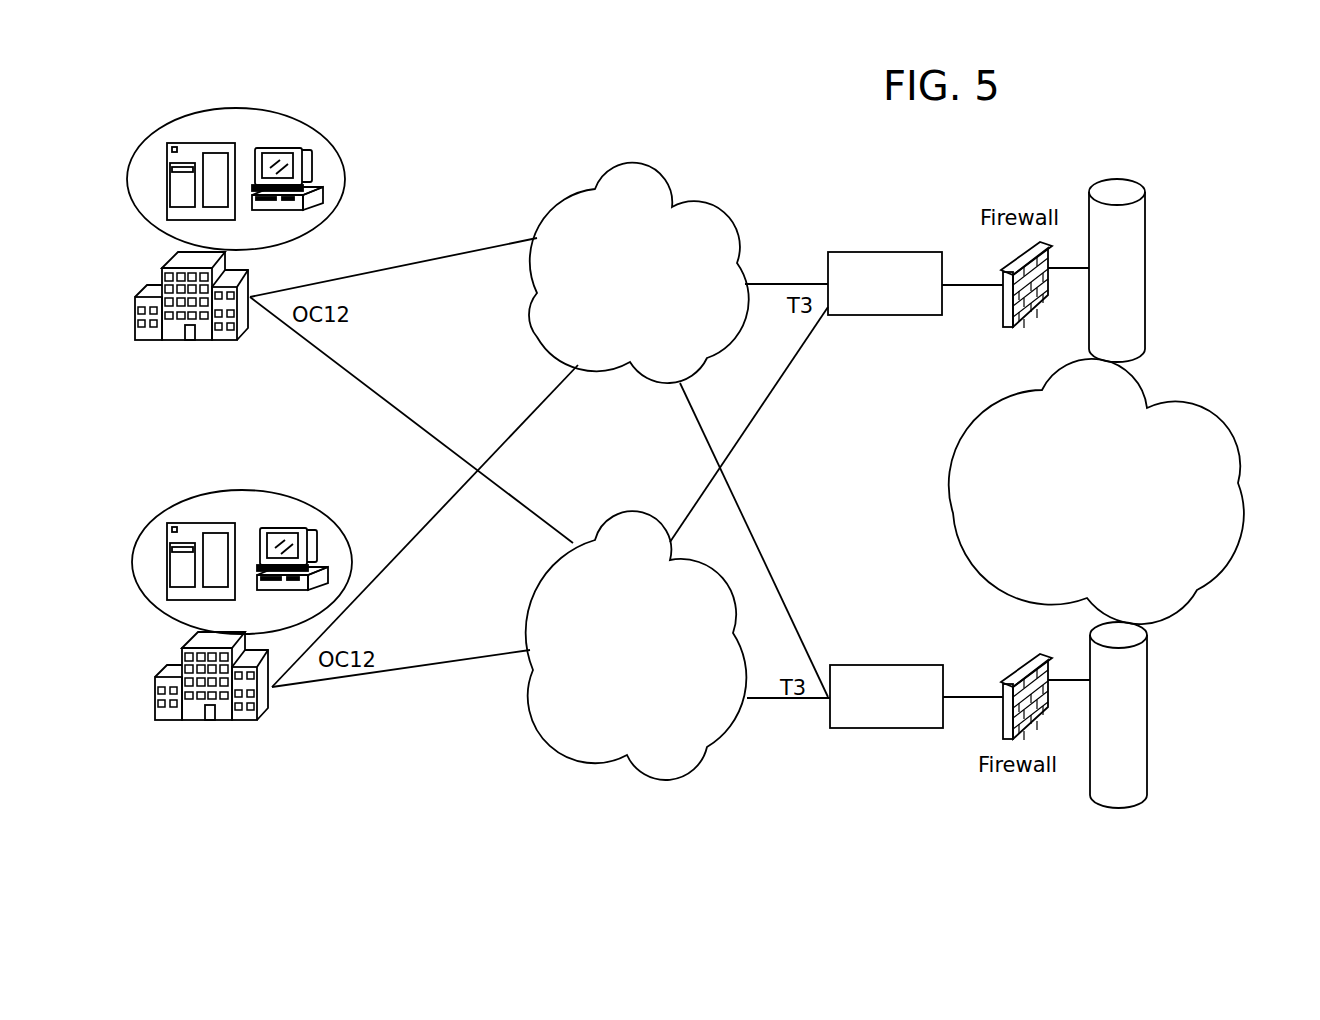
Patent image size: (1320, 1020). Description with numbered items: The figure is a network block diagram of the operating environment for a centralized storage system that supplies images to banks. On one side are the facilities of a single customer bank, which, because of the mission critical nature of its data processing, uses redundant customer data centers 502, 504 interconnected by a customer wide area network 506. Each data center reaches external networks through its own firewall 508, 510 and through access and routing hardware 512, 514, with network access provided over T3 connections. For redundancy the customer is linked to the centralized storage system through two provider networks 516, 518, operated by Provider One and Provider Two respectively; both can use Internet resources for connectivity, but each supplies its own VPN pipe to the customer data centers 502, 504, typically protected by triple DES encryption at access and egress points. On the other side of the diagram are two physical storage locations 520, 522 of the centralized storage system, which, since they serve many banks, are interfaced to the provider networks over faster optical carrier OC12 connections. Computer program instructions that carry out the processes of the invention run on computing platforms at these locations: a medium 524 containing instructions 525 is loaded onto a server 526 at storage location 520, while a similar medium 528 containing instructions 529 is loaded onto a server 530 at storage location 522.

The customer data center 502 is at (1143, 213).
The customer data center 504 is at (1148, 713).
The customer wide area network 506 is at (1185, 390).
The firewall 508 is at (1003, 310).
The firewall 510 is at (1017, 670).
The access and routing hardware 512 is at (858, 248).
The access and routing hardware 514 is at (883, 665).
The provider network 516 is at (572, 190).
The provider network 518 is at (557, 752).
The storage location 520 is at (237, 338).
The storage location 522 is at (260, 717).
The medium 524 is at (192, 143).
The instructions 525 is at (218, 163).
The server 526 is at (300, 150).
The medium 528 is at (195, 523).
The instructions 529 is at (218, 545).
The server 530 is at (303, 532).